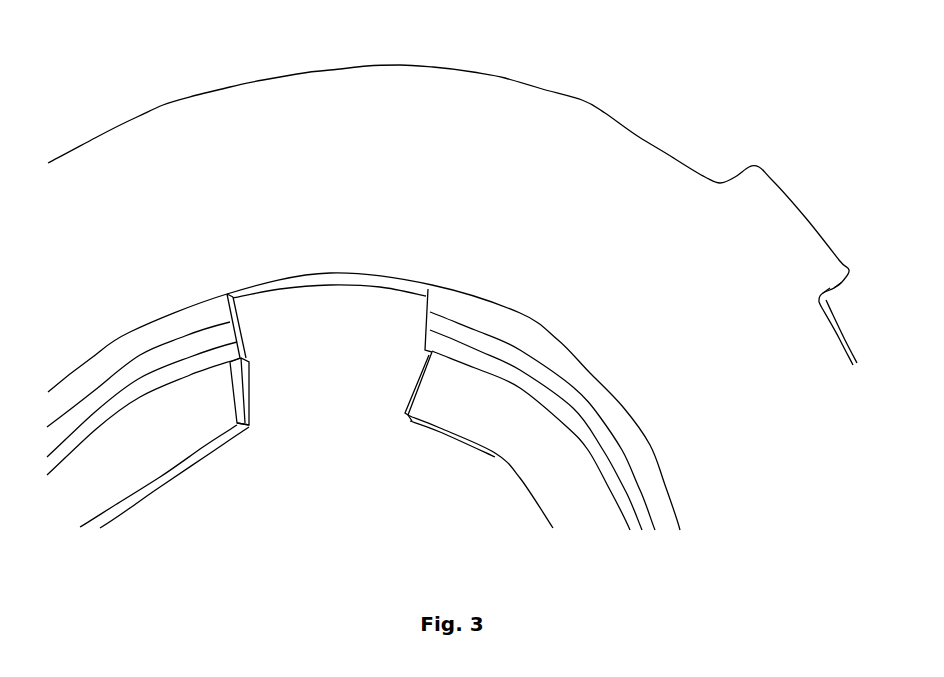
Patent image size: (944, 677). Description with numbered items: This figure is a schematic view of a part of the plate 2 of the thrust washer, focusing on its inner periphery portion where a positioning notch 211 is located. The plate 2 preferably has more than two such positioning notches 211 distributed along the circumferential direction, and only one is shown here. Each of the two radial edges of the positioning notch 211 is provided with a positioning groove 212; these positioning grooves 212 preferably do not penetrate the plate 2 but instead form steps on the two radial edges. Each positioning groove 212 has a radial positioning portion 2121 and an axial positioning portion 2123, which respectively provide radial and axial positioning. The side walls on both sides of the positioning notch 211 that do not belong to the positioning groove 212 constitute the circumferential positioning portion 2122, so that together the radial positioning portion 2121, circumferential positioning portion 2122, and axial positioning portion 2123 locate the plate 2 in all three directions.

The plate 2 is at (620, 132).
The positioning notch 211 is at (327, 310).
The positioning groove 212 is at (247, 423).
The radial positioning portion 2121 is at (425, 355).
The circumferential positioning portion 2122 is at (420, 373).
The axial positioning portion 2123 is at (250, 405).